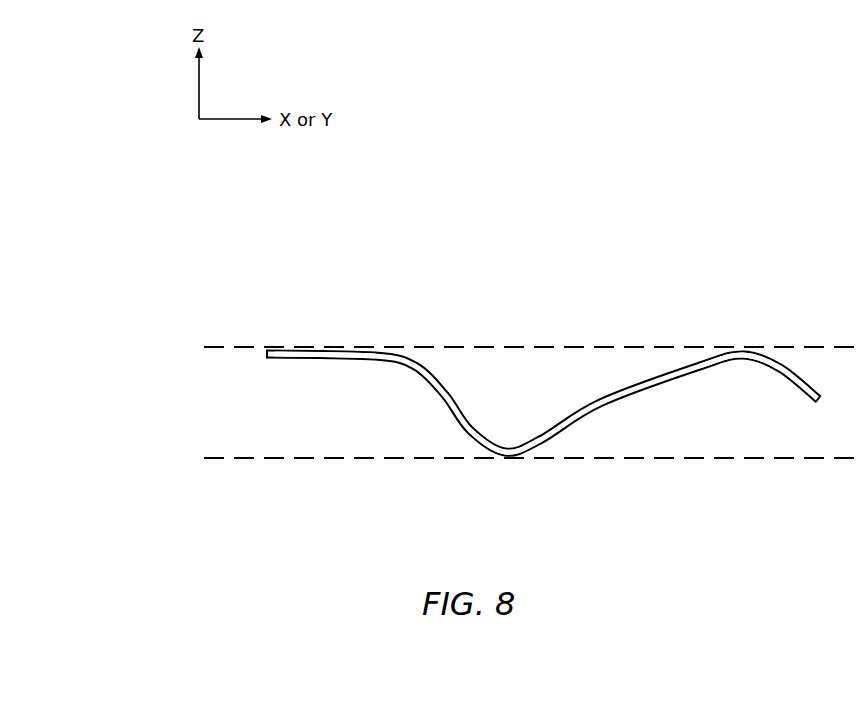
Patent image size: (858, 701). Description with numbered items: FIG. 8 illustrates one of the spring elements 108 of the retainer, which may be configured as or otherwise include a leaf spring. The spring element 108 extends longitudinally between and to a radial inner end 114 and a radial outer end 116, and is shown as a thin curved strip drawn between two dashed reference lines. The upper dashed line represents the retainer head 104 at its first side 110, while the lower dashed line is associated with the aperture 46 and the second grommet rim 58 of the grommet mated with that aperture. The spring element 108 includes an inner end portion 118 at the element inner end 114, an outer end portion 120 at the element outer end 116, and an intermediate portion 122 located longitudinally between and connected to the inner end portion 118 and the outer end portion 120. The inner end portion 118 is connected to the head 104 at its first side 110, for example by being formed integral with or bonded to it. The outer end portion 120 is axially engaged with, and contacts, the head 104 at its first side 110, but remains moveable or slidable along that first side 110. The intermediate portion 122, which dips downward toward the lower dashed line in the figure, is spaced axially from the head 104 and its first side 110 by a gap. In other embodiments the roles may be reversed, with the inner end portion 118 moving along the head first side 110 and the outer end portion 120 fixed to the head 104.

The retainer head 104 is at (460, 366).
The first side of the retainer head 110 is at (214, 349).
The aperture 46 is at (488, 442).
The second grommet rim 58 is at (248, 458).
The spring element 108 is at (534, 399).
The radial inner end 114 is at (270, 349).
The radial outer end 116 is at (804, 401).
The inner end portion 118 is at (325, 373).
The outer end portion 120 is at (747, 375).
The intermediate portion 122 is at (508, 424).